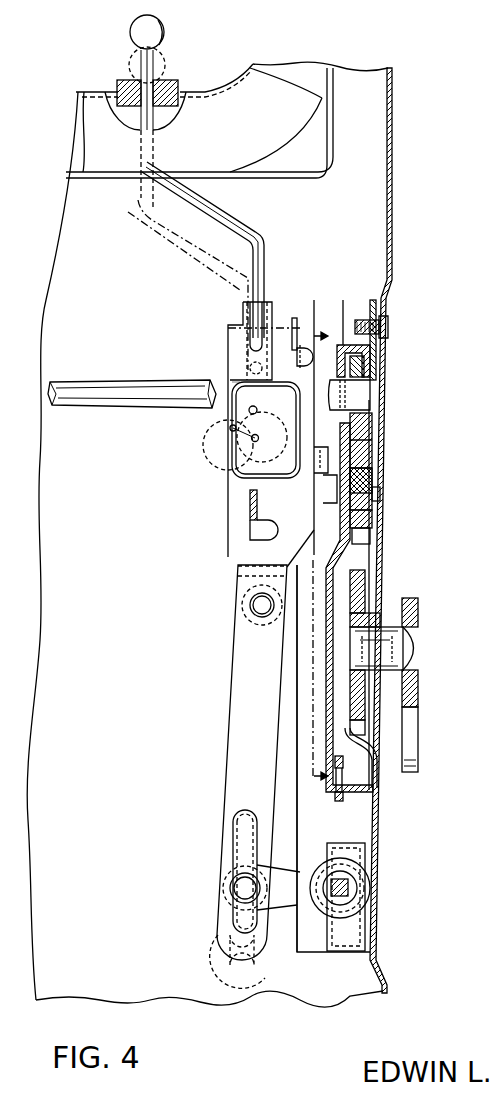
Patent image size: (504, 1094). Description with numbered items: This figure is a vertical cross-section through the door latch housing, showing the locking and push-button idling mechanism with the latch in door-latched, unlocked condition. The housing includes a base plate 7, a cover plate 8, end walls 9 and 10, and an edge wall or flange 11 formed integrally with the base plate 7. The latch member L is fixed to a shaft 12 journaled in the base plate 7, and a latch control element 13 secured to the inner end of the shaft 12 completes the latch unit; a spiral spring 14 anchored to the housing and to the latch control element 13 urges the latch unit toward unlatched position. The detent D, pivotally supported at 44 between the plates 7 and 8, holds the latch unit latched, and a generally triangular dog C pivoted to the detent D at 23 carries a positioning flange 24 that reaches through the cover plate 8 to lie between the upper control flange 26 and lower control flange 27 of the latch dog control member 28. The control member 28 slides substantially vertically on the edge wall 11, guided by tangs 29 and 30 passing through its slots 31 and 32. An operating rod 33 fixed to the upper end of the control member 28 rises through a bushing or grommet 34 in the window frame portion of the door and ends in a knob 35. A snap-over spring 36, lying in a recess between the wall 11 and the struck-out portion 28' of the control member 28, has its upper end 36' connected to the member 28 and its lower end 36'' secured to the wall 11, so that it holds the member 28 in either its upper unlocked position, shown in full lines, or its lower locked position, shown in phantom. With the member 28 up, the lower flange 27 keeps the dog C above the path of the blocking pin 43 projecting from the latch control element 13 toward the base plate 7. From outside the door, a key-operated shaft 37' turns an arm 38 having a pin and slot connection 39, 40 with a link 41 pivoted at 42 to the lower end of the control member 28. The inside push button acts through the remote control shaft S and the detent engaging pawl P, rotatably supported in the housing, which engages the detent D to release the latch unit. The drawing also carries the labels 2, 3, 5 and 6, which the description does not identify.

The housing 2 is at (207, 534).
The wall 3 is at (393, 243).
The section line 5 is at (325, 555).
The screw 6 is at (390, 326).
The base plate 7 is at (382, 570).
The cover plate 8 is at (322, 566).
The end wall 9 is at (343, 345).
The end wall 10 is at (352, 794).
The edge wall 11 is at (310, 832).
The shaft 12 is at (400, 660).
The latch control element 13 is at (372, 700).
The spiral spring 14 is at (360, 738).
The pivot 23 is at (378, 522).
The positioning flange 24 is at (366, 480).
The upper control flange 26 is at (306, 477).
The lower control flange 27 is at (330, 516).
The latch dog control member 28 is at (244, 429).
The struck out portion 28' is at (211, 440).
The tang 29 is at (306, 355).
The tang 30 is at (274, 532).
The slot 31 is at (295, 318).
The slot 32 is at (252, 505).
The operating rod 33 is at (264, 258).
The bushing or grommet 34 is at (124, 80).
The knob 35 is at (133, 32).
The snap-over spring 36 is at (266, 430).
The upper end of spring 36' is at (217, 422).
The lower end of spring 36'' is at (210, 445).
The shaft 37' is at (362, 897).
The arm 38 is at (276, 912).
The pin 39 is at (240, 886).
The slot 40 is at (244, 826).
The link 41 is at (228, 787).
The pivot 42 is at (248, 605).
The blocking pin 43 is at (378, 614).
The detent supporting pin 44 is at (380, 496).
The dog C is at (378, 546).
The detent D is at (370, 462).
The latch member L is at (420, 758).
The detent engaging pawl P is at (372, 432).
The remote control shaft S is at (114, 388).